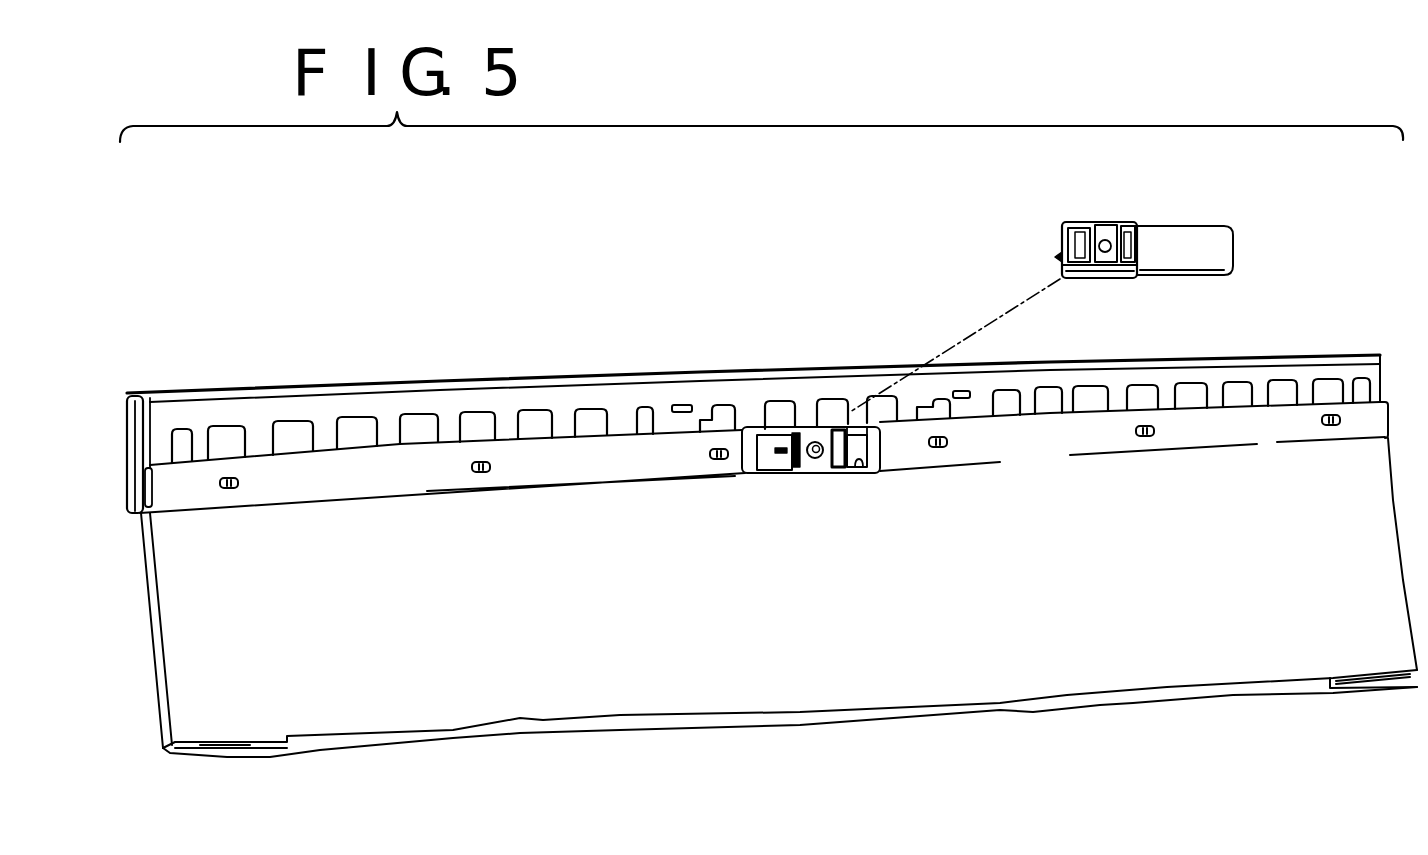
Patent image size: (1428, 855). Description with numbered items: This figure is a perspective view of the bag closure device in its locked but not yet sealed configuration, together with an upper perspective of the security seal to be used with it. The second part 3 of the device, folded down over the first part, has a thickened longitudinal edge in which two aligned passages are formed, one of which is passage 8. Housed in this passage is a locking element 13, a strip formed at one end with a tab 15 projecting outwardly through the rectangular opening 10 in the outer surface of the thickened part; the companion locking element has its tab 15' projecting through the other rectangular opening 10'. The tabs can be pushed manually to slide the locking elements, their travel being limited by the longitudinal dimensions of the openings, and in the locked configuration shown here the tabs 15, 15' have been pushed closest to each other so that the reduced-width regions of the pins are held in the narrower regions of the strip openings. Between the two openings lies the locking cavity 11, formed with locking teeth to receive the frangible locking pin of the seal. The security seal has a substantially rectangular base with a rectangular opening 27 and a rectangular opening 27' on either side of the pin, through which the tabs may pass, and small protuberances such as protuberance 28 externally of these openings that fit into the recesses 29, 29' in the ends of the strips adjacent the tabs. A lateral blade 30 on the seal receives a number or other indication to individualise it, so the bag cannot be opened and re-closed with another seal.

The second part 3 is at (1378, 422).
The passage 8 is at (143, 500).
The locking element 13 is at (138, 485).
The rectangular opening 10 is at (759, 378).
The rectangular opening 10' is at (885, 489).
The locking cavity 11 is at (827, 467).
The tab 15 is at (798, 391).
The tab 15' is at (912, 468).
The recess 29 is at (781, 493).
The recess 29' is at (914, 504).
The rectangular opening 27 is at (1062, 230).
The rectangular opening 27' is at (1143, 206).
The protuberance 28 is at (1057, 257).
The lateral blade 30 is at (1212, 243).